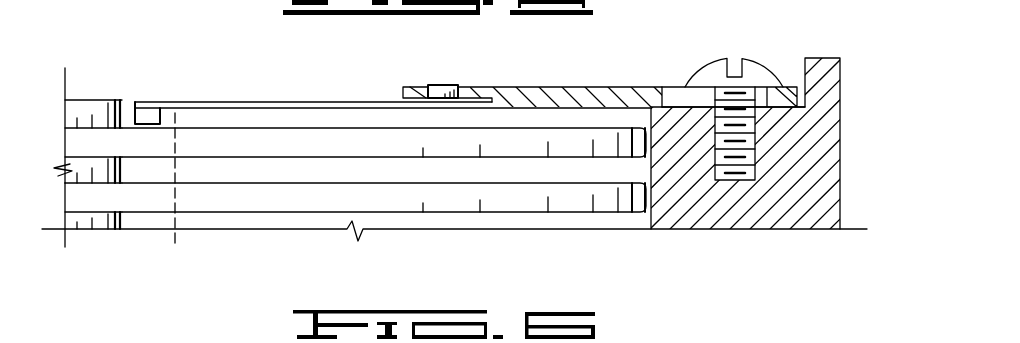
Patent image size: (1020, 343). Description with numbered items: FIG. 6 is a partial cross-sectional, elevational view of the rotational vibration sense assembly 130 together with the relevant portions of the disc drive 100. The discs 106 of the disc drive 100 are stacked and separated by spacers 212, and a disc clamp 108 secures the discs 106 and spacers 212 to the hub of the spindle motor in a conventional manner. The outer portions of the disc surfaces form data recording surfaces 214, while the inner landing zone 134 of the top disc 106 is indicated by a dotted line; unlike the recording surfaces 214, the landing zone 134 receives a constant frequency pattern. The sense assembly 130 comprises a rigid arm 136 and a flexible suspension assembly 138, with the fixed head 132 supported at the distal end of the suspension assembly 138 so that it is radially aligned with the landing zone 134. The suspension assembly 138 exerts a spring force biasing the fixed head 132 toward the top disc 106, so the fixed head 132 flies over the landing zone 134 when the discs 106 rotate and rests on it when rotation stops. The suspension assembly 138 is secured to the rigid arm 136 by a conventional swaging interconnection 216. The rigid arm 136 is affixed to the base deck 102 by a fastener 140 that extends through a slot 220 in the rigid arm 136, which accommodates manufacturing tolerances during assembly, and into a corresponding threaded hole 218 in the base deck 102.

The disc drive 100 is at (215, 60).
The base deck 102 is at (770, 212).
The discs 106 is at (449, 143).
The disc clamp 108 is at (90, 105).
The rotational vibration sense assembly 130 is at (561, 63).
The fixed head 132 is at (145, 106).
The landing zone 134 is at (138, 244).
The rigid arm 136 is at (585, 88).
The flexible suspension assembly 138 is at (255, 101).
The fastener 140 is at (749, 61).
The spacers 212 is at (90, 163).
The data recording surfaces 214 is at (326, 236).
The swaging interconnection 216 is at (437, 73).
The threaded hole 218 is at (707, 163).
The slot 220 is at (698, 56).